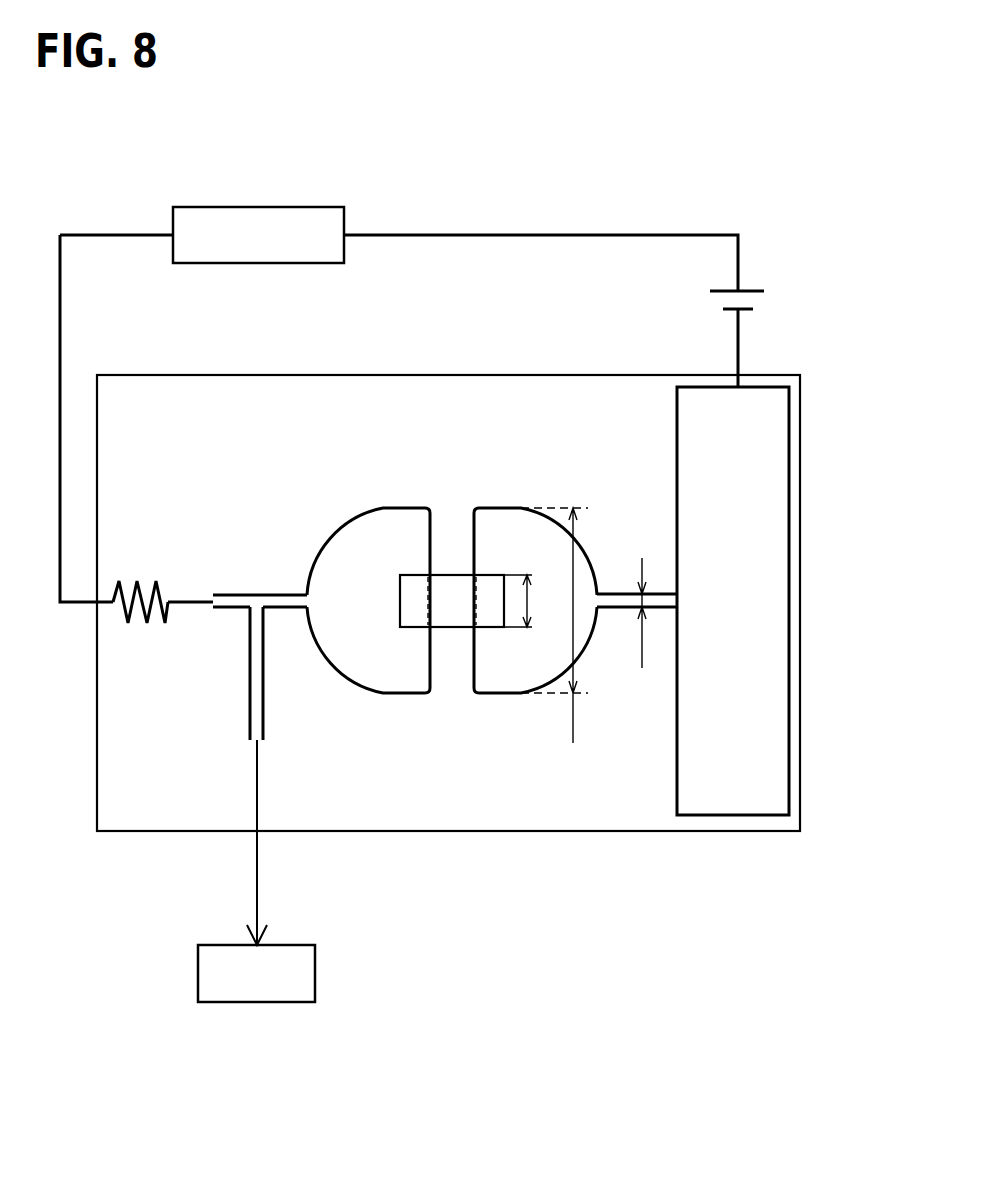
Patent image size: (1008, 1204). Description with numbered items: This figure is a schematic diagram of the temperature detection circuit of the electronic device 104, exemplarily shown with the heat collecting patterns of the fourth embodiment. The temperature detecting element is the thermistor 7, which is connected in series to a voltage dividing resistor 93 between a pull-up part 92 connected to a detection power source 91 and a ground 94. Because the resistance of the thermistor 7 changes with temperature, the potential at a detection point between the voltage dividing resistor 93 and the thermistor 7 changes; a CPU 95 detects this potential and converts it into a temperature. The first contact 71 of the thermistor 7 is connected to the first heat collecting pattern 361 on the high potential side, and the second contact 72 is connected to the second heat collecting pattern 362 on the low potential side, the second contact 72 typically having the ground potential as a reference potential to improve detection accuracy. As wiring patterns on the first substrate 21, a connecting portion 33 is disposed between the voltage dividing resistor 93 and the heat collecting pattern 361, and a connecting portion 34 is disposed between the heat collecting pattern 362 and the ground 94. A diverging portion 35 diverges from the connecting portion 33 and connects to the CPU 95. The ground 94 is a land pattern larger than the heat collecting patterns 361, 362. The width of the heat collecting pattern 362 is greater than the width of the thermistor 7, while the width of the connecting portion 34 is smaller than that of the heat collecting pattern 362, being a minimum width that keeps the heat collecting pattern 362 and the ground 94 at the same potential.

The electronic device 104 is at (561, 850).
The first substrate 21 is at (561, 374).
The connecting portion 33 is at (277, 599).
The connecting portion 34 is at (612, 598).
The diverging portion 35 is at (265, 693).
The first heat collecting pattern 361 is at (369, 530).
The second heat collecting pattern 362 is at (493, 527).
The thermistor 7 is at (455, 590).
The first contact 71 is at (413, 617).
The second contact 72 is at (492, 617).
The detection power source 91 is at (756, 289).
The pull-up part 92 is at (283, 207).
The voltage dividing resistor 93 is at (140, 624).
The ground 94 is at (772, 405).
The CPU 95 is at (315, 970).